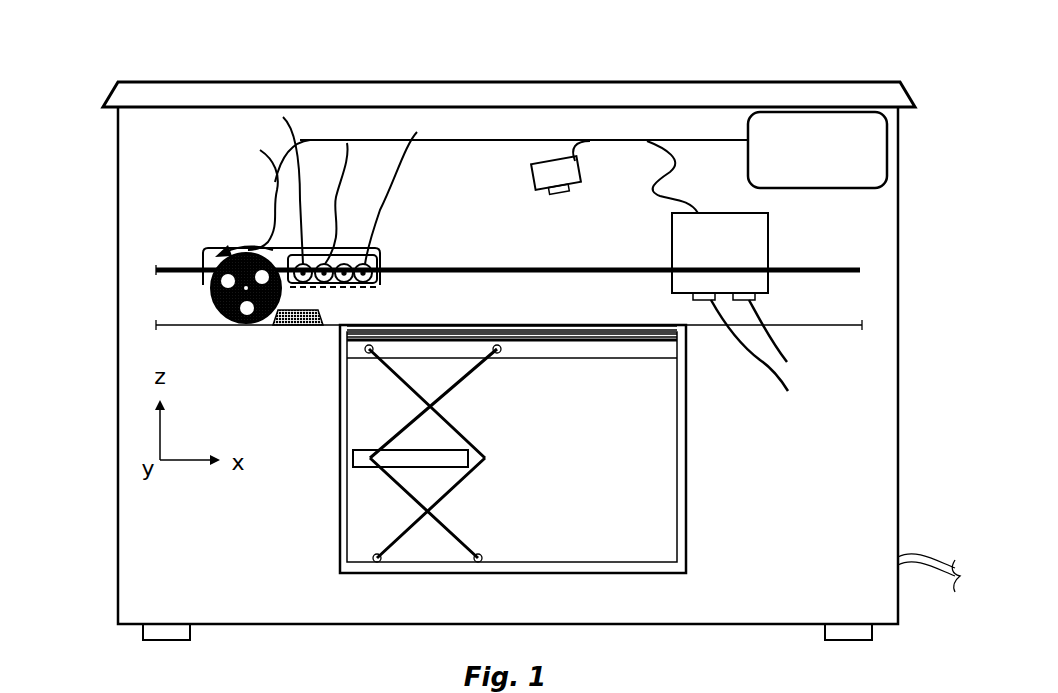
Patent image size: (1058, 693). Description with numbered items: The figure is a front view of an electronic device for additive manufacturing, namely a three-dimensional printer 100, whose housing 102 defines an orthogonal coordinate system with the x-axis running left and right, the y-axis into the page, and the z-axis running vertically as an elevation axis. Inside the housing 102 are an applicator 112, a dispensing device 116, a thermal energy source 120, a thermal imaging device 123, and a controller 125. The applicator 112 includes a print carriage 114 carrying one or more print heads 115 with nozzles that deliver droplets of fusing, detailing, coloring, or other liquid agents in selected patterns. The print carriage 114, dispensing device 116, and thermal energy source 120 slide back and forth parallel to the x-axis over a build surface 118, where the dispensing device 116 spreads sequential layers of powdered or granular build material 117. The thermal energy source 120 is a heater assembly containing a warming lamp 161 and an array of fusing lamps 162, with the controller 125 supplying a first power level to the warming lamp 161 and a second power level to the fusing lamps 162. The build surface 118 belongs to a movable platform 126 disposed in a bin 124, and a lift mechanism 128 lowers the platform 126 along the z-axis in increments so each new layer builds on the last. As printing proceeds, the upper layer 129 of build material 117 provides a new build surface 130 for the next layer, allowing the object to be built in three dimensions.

The 3D printer 100 is at (130, 52).
The housing 102 is at (117, 256).
The applicator 112 is at (764, 237).
The print carriage 114 is at (766, 263).
The print heads 115 is at (774, 354).
The dispensing device 116 is at (210, 287).
The build material 117 is at (290, 323).
The build surface 118 is at (510, 334).
The thermal energy source 120 is at (348, 264).
The thermal imaging device 123 is at (555, 172).
The bin 124 is at (338, 553).
The controller 125 is at (790, 110).
The movable platform 126 is at (608, 352).
The lift mechanism 128 is at (455, 432).
The upper layer 129 is at (636, 325).
The build surface 130 is at (528, 320).
The warming lamp 161 is at (261, 192).
The fusing lamps 162 is at (349, 186).